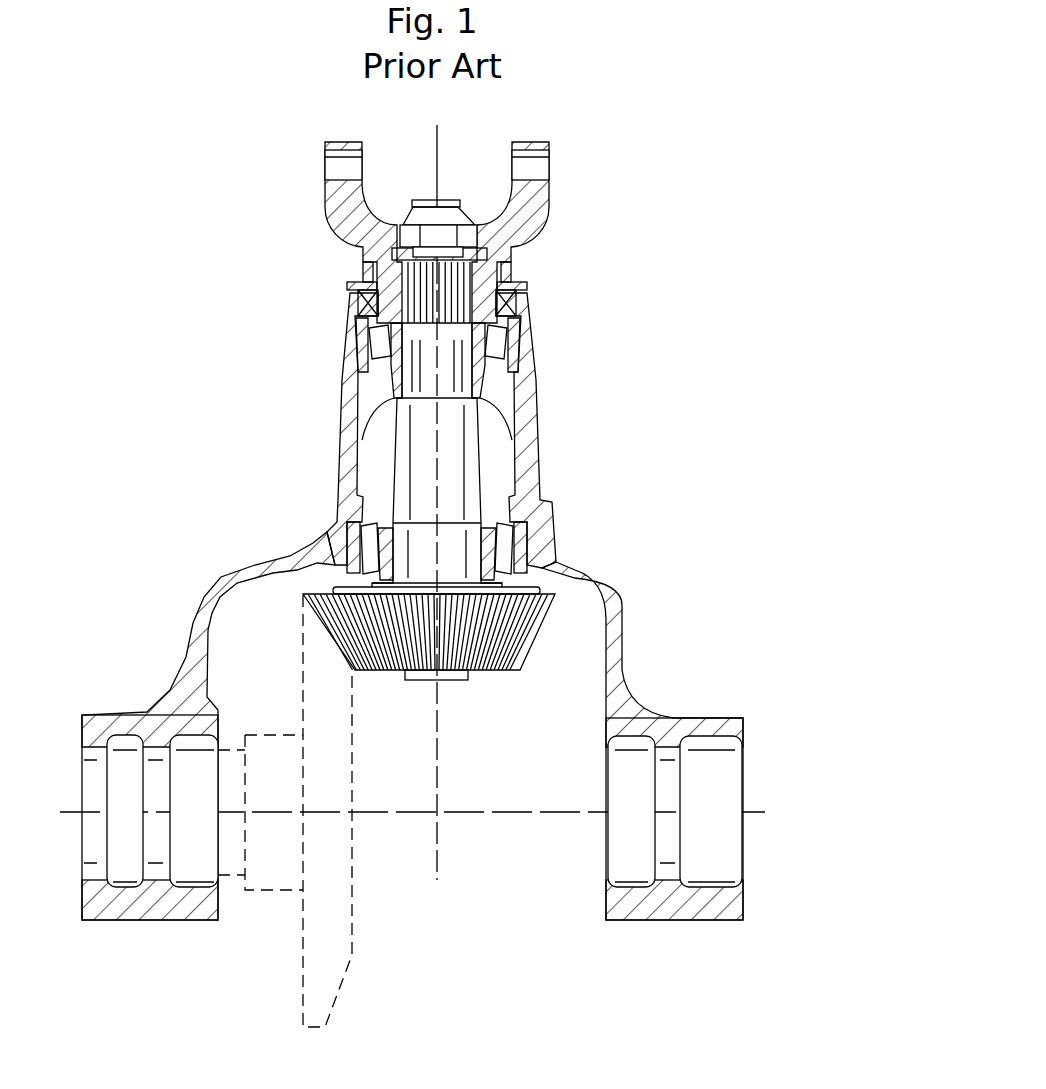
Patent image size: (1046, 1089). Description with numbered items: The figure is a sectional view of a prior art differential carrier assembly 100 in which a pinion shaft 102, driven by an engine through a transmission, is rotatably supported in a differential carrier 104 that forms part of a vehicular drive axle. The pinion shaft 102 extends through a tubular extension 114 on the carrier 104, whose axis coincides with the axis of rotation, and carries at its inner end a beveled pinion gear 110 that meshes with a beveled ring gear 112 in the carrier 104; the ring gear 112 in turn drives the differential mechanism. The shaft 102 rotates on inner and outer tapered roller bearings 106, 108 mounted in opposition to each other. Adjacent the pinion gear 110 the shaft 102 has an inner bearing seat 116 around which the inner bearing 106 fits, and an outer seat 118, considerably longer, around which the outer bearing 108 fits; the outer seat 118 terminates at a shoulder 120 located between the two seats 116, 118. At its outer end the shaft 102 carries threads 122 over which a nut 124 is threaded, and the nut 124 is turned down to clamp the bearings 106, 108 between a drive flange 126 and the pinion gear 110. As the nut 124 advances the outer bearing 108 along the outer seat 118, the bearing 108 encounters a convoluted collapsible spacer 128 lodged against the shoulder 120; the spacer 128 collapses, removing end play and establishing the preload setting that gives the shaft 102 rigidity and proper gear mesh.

The axle assembly 100 is at (412, 576).
The pinion shaft 102 is at (483, 473).
The differential carrier 104 is at (630, 677).
The inner tapered roller bearing 106 is at (545, 520).
The outer tapered roller bearing 108 is at (528, 336).
The beveled pinion gear 110 is at (497, 675).
The beveled ring gear 112 is at (350, 936).
The tubular extension 114 is at (342, 460).
The inner bearing seat 116 is at (420, 540).
The outer bearing seat 118 is at (418, 397).
The shoulder 120 is at (486, 418).
The threads 122 is at (443, 200).
The nut 124 is at (470, 237).
The drive flange 126 is at (545, 194).
The convoluted collapsible spacer 128 is at (530, 367).